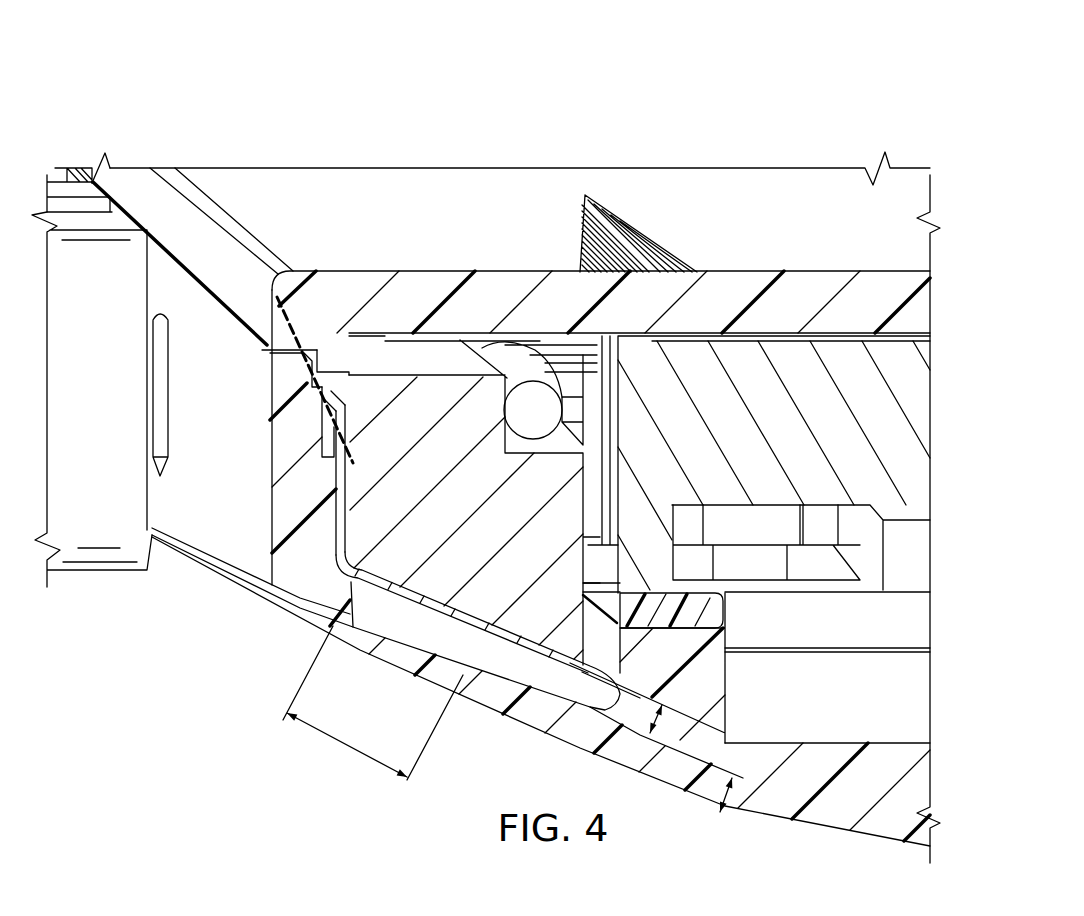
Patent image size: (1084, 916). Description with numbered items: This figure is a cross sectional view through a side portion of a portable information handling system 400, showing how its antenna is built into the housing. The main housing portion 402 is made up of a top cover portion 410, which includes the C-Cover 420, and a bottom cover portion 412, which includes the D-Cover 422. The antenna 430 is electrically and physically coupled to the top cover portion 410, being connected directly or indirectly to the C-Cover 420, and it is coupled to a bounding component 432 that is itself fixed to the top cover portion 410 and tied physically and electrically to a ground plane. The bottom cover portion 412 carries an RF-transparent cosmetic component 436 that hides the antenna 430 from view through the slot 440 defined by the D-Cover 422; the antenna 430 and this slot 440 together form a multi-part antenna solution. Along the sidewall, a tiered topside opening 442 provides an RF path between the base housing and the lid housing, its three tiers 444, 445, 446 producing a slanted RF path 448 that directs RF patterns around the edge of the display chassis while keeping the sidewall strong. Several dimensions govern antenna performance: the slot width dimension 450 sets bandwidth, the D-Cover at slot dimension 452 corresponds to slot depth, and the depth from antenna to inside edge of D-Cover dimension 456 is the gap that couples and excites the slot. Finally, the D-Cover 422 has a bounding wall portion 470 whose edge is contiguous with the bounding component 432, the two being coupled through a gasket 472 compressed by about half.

The portable information handling system 400 is at (226, 66).
The main housing portion 402 is at (226, 620).
The top cover portion 410 is at (646, 140).
The bottom cover portion 412 is at (789, 852).
The C-Cover 420 is at (497, 180).
The D-Cover 422 is at (862, 836).
The antenna 430 is at (445, 385).
The bounding component 432 is at (740, 355).
The cosmetic component 436 is at (268, 512).
The slot 440 is at (406, 690).
The topside opening 442 is at (337, 376).
The tier 444 is at (336, 483).
The tier 445 is at (320, 437).
The tier 446 is at (324, 391).
The slanted RF path 448 is at (262, 350).
The slot width dimension 450 is at (348, 750).
The D-Cover at slot dimension 452 is at (732, 802).
The depth from antenna to inside edge of D-Cover dimension 456 is at (660, 727).
The bounding wall portion 470 is at (725, 668).
The gasket 472 is at (718, 613).